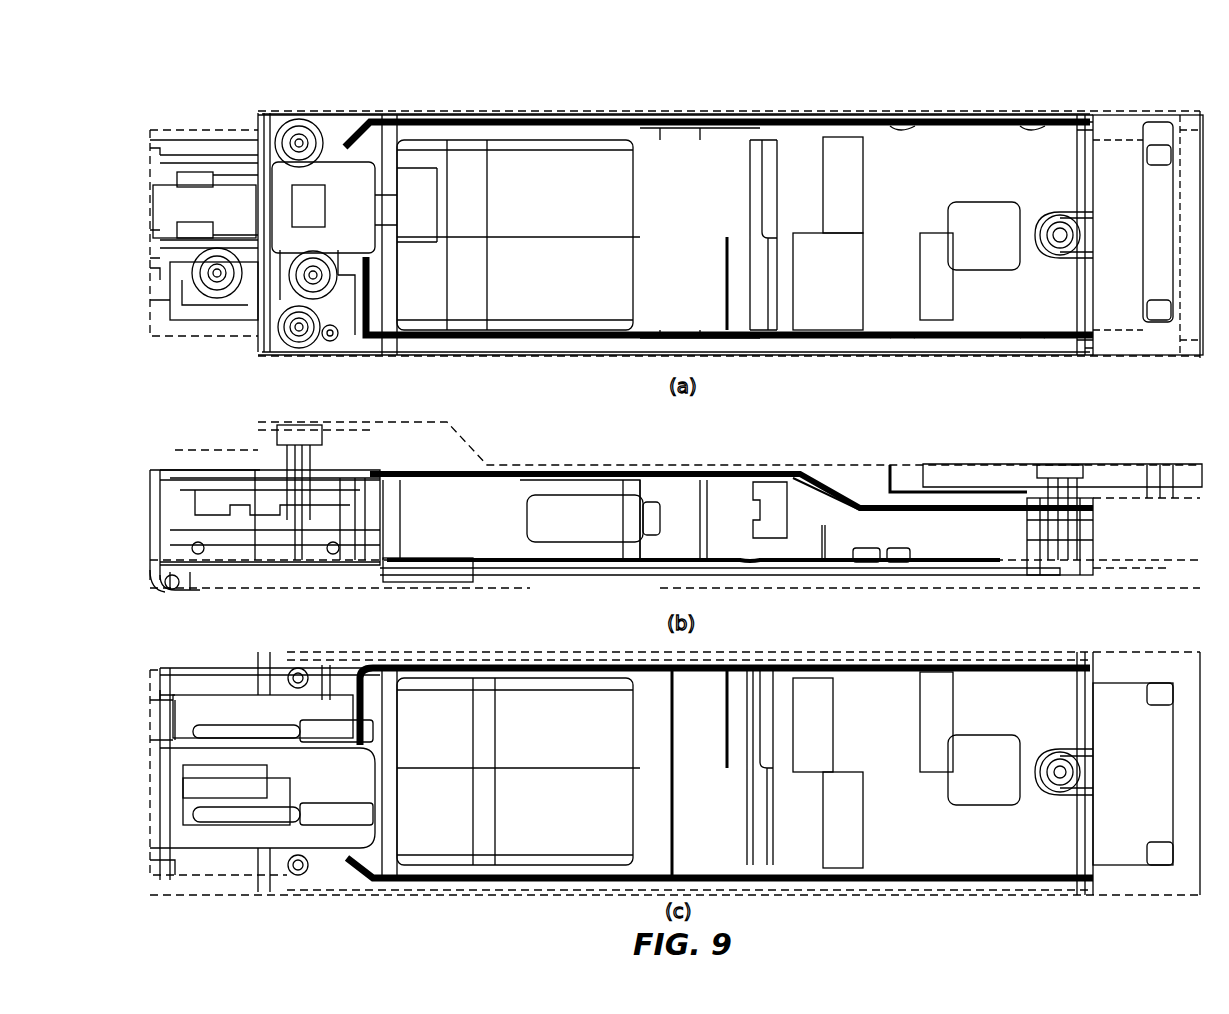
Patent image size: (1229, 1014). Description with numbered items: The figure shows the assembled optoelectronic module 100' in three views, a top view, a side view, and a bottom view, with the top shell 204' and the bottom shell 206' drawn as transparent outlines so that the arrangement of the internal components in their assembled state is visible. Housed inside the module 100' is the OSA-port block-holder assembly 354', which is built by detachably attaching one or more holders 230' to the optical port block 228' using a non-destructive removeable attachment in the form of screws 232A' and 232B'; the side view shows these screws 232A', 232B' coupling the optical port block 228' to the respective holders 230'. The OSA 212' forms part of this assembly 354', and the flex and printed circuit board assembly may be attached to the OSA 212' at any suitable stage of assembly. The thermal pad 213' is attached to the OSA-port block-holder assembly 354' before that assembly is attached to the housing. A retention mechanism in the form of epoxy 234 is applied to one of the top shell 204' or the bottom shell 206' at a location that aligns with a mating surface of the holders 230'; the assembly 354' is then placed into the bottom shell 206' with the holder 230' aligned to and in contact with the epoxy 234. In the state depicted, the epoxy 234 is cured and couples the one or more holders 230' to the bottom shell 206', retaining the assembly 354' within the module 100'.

The optoelectronic module 100' is at (1152, 199).
The OSA-port block-holder assembly 354' is at (395, 194).
The optical port block 228' is at (266, 497).
The OSA 212' is at (520, 312).
The screw 232A' is at (199, 316).
The screw 232B' is at (297, 318).
The holder 230' is at (205, 596).
The epoxy 234 is at (322, 544).
The thermal pad 213' is at (420, 592).
The top shell 204' is at (911, 471).
The bottom shell 206' is at (866, 599).